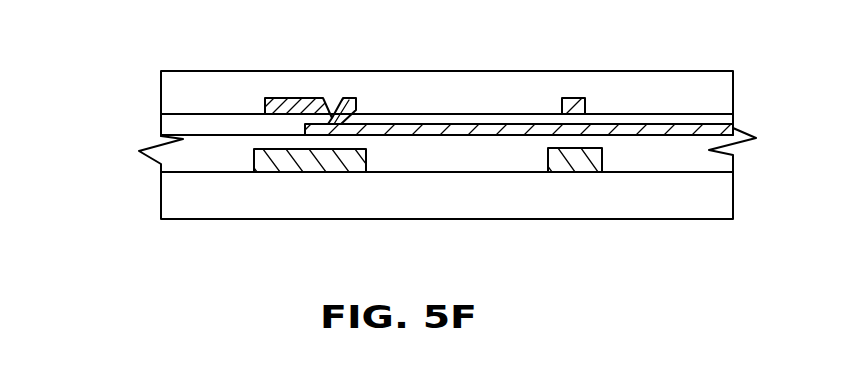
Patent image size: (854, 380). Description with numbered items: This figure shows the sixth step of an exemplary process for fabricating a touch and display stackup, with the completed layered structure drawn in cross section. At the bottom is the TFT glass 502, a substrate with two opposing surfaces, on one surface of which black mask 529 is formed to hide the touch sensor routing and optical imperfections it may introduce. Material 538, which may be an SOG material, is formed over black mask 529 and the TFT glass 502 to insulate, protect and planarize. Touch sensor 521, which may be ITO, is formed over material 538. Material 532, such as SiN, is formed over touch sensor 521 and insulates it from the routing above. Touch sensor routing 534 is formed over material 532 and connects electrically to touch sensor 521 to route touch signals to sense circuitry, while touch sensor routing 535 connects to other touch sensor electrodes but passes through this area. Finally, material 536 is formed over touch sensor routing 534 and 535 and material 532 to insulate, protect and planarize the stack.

The TFT glass 502 is at (185, 192).
The touch sensor 521 is at (465, 128).
The black mask 529 is at (305, 165).
The material 532 is at (180, 123).
The touch sensor routing 534 is at (350, 97).
The touch sensor routing 535 is at (578, 97).
The material 536 is at (188, 98).
The material 538 is at (183, 164).